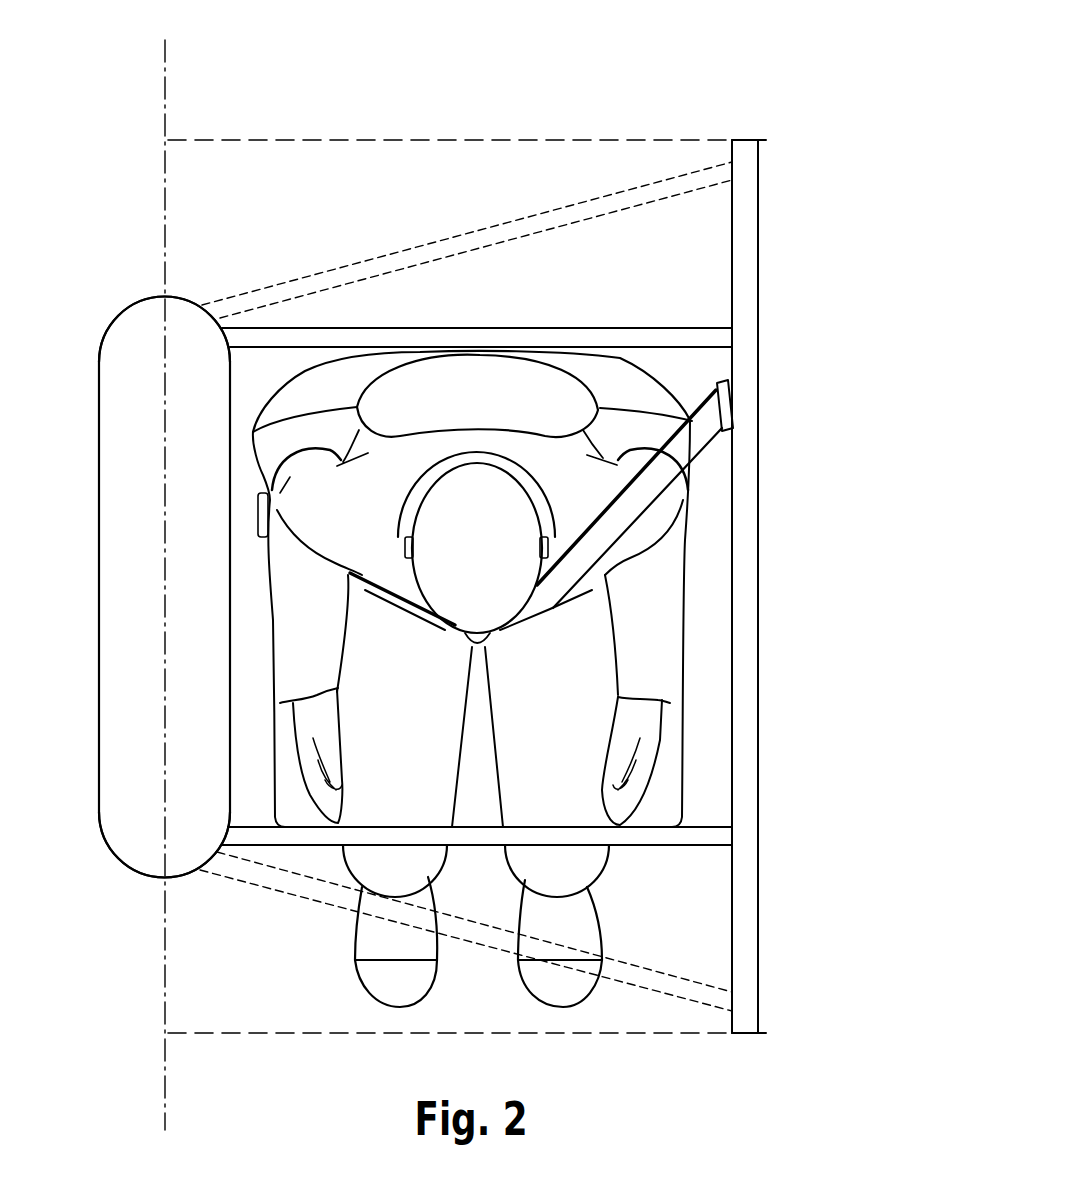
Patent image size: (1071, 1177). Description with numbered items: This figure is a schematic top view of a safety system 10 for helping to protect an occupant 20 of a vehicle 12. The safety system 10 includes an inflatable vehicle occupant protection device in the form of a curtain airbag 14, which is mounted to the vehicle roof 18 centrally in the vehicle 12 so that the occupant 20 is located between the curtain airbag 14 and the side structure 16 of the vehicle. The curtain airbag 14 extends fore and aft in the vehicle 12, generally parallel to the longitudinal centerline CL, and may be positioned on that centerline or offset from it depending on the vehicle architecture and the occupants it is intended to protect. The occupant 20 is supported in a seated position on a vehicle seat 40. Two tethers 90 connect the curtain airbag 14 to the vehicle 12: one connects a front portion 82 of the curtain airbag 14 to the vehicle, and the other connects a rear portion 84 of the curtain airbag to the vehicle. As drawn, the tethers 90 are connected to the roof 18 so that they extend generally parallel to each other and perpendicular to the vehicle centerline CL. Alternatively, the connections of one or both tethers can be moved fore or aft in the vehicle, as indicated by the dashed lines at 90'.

The safety system 10 is at (140, 276).
The vehicle 12 is at (845, 168).
The curtain airbag 14 is at (138, 532).
The side structure 16 is at (747, 523).
The vehicle roof 18 is at (493, 140).
The occupant 20 is at (643, 525).
The vehicle seat 40 is at (630, 423).
The front portion 82 is at (145, 815).
The rear portion 84 is at (137, 340).
The tethers 90 is at (477, 586).
The tethers in alternative positions 90' is at (466, 622).